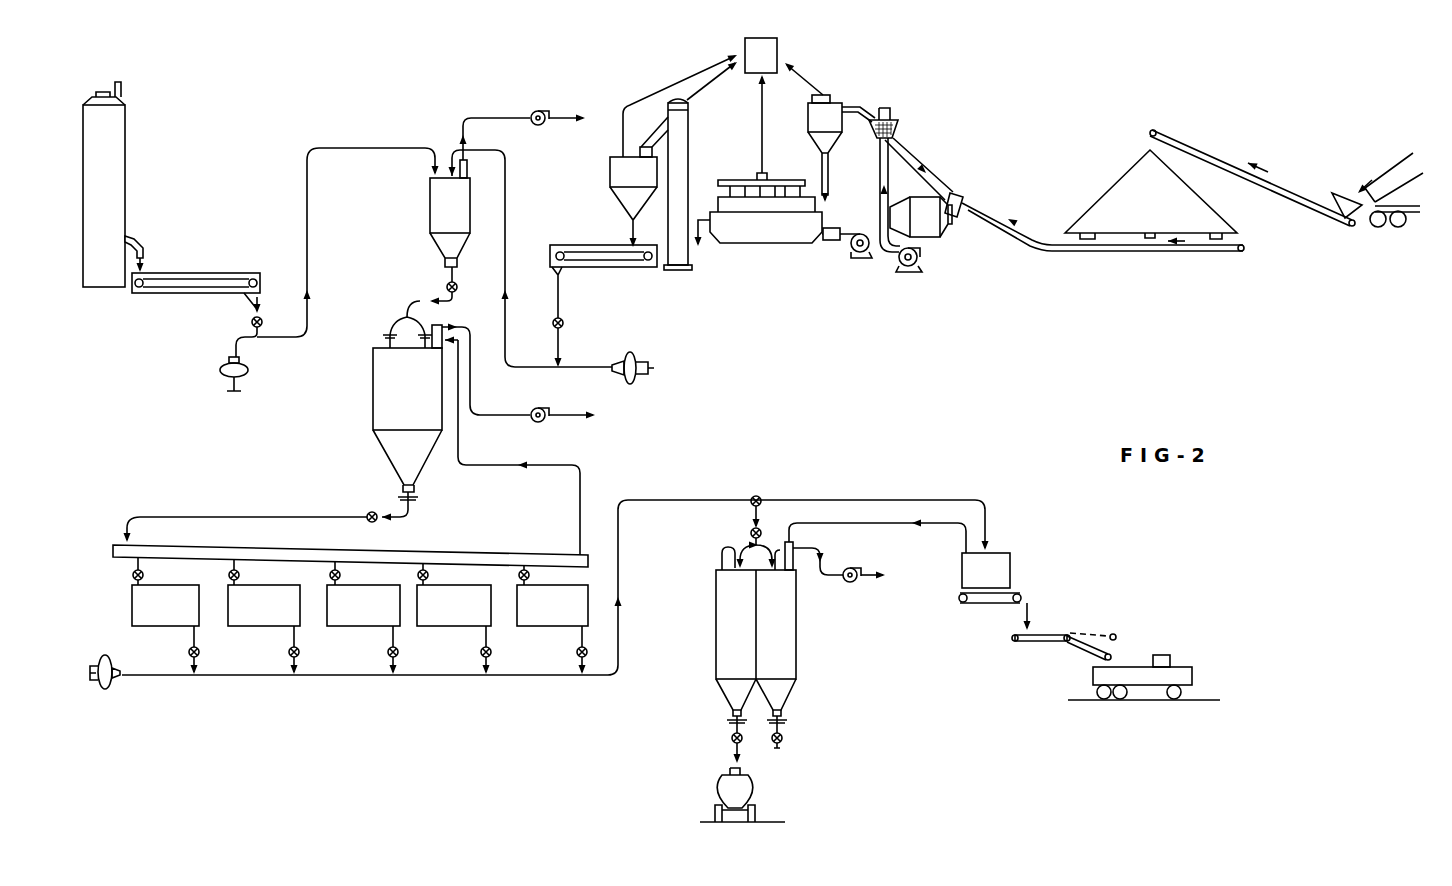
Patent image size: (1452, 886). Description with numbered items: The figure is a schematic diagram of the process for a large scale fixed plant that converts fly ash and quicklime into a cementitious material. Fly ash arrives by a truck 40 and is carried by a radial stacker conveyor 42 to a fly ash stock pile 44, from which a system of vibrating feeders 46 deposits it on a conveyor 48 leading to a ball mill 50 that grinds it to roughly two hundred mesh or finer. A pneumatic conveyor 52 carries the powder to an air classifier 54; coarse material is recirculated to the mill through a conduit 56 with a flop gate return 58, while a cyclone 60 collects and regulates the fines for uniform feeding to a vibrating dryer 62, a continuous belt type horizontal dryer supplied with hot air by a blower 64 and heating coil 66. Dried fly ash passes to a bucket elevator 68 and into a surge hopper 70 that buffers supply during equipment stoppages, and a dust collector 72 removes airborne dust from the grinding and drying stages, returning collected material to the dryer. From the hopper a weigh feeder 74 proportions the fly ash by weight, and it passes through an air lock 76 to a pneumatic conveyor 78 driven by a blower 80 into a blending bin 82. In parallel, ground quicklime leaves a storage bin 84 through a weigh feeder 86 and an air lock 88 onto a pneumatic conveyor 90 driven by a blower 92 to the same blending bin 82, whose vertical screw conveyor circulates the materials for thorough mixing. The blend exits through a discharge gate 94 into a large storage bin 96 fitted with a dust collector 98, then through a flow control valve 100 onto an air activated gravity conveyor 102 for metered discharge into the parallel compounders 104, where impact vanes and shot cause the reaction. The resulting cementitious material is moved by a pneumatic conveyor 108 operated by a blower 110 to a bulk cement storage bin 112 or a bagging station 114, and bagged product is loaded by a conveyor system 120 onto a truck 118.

The truck 40 is at (1397, 167).
The radial stacker conveyor 42 is at (1213, 158).
The fly ash stock pile 44 is at (1128, 168).
The vibrating feeders 46 is at (1085, 251).
The conveyor 48 is at (1018, 245).
The ball mill 50 is at (930, 237).
The pneumatic conveyor 52 is at (879, 176).
The air classifier 54 is at (900, 118).
The conduit 56 is at (938, 172).
The flop gate return 58 is at (965, 197).
The cyclone 60 is at (832, 100).
The vibrating dryer 62 is at (760, 240).
The blower 64 is at (864, 253).
The heating coil 66 is at (830, 242).
The bucket elevator 68 is at (688, 150).
The surge hopper 70 is at (610, 175).
The dust collector 72 is at (750, 45).
The weigh feeder 74 is at (600, 245).
The air lock 76 is at (563, 323).
The pneumatic conveyor 78 is at (552, 376).
The blower 80 is at (632, 352).
The blending bin 82 is at (430, 208).
The storage bin 84 is at (125, 140).
The weigh feeder 86 is at (222, 268).
The air lock 88 is at (252, 322).
The pneumatic conveyor 90 is at (362, 128).
The blower 92 is at (222, 377).
The discharge gate 94 is at (446, 284).
The storage bin 96 is at (373, 422).
The dust collector 98 is at (440, 322).
The flow control valve 100 is at (378, 512).
The air activated gravity conveyor 102 is at (270, 513).
The compounders 104 is at (132, 608).
The pneumatic conveyor 108 is at (539, 611).
The blower 110 is at (96, 688).
The bulk cement storage bin 112 is at (796, 648).
The bagging station 114 is at (1005, 560).
The truck 118 is at (1138, 670).
The conveyor system 120 is at (1048, 648).